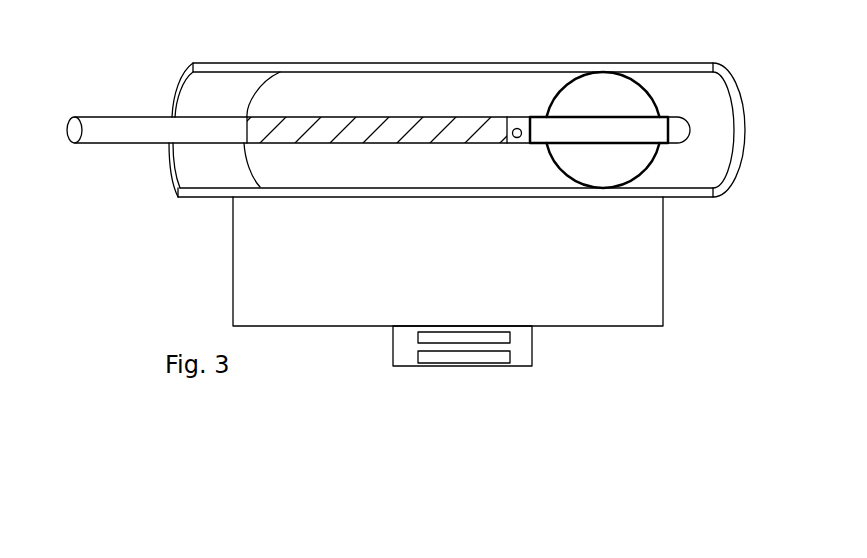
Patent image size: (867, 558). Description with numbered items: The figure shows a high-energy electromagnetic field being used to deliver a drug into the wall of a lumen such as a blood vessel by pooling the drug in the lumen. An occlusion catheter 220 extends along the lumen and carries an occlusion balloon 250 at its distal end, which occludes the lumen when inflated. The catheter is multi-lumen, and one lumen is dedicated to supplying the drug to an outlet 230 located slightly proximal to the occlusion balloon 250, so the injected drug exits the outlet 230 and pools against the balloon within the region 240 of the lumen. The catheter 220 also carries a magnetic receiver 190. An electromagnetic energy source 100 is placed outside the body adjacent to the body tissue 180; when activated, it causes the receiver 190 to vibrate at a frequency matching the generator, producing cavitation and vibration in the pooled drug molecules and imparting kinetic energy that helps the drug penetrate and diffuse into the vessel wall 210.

The electromagnetic energy source 100 is at (413, 333).
The body tissue 180 is at (590, 300).
The receiver 190 is at (337, 137).
The vessel wall 210 is at (437, 70).
The occlusion catheter 220 is at (217, 143).
The outlet 230 is at (521, 129).
The cavity 240 is at (359, 97).
The occlusion balloon 250 is at (620, 93).